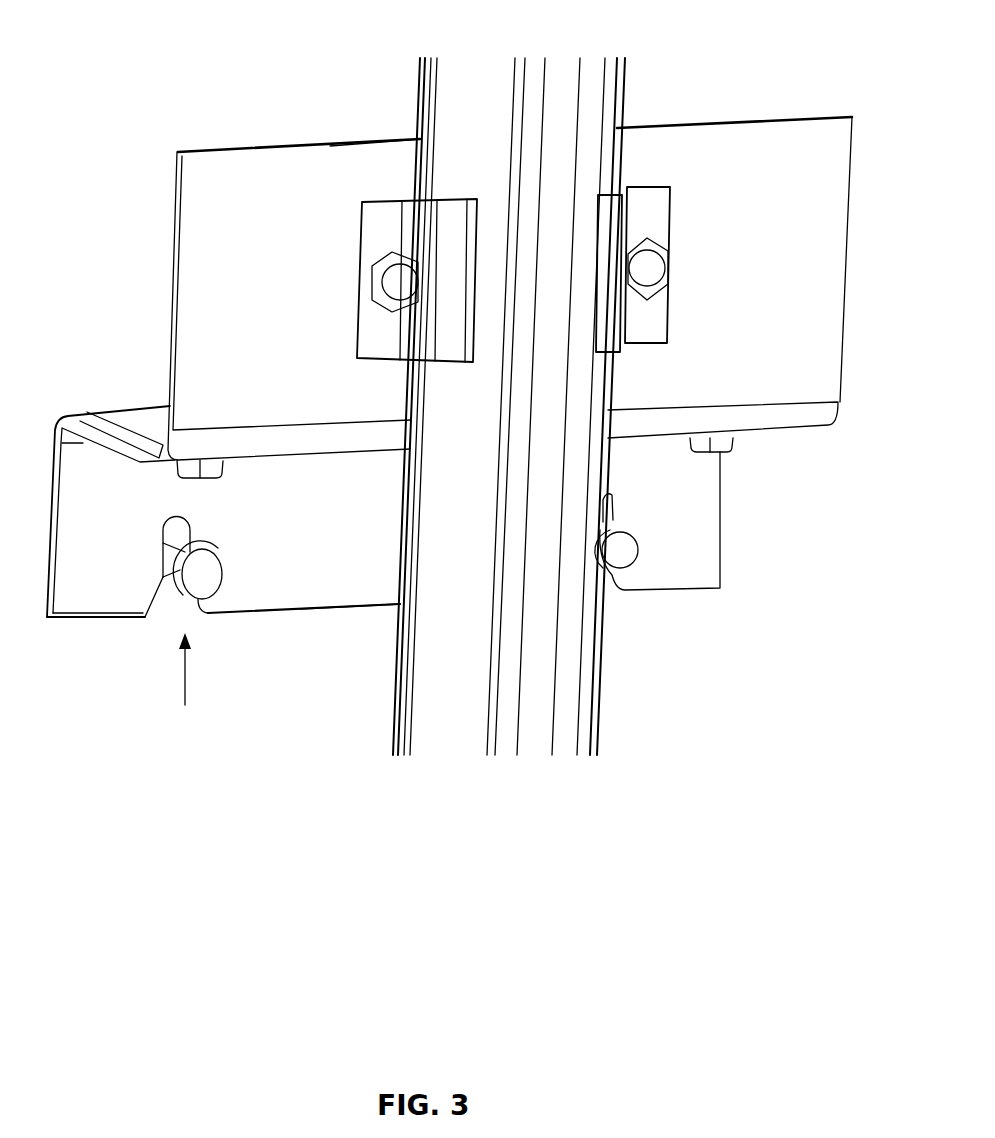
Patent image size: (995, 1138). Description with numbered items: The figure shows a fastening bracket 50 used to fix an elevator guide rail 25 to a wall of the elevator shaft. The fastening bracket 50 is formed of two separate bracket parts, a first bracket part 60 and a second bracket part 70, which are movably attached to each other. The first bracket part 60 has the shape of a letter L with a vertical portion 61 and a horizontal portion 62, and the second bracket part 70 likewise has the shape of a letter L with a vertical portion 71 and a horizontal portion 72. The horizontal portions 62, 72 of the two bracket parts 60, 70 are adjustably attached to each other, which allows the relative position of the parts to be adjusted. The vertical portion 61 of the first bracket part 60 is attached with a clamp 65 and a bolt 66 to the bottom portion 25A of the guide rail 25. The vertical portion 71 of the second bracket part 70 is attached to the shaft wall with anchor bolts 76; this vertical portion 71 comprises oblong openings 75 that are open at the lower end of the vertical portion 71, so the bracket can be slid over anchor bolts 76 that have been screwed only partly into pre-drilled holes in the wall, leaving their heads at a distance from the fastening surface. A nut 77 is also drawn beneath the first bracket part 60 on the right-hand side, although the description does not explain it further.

The guide rail 25 is at (626, 696).
The bottom portion of the guide rail 25A is at (567, 747).
The fastening bracket 50 is at (194, 64).
The first bracket part 60 is at (283, 188).
The vertical portion of the first bracket part 61 is at (378, 183).
The horizontal portion of the first bracket part 62 is at (130, 423).
The clamp 65 is at (380, 250).
The bolt 66 is at (393, 286).
The second bracket part 70 is at (293, 612).
The vertical portion of the second bracket part 71 is at (357, 610).
The horizontal portion of the second bracket part 72 is at (113, 453).
The oblong openings 75 is at (189, 689).
The anchor bolts 76 is at (195, 590).
The nut 77 is at (722, 450).